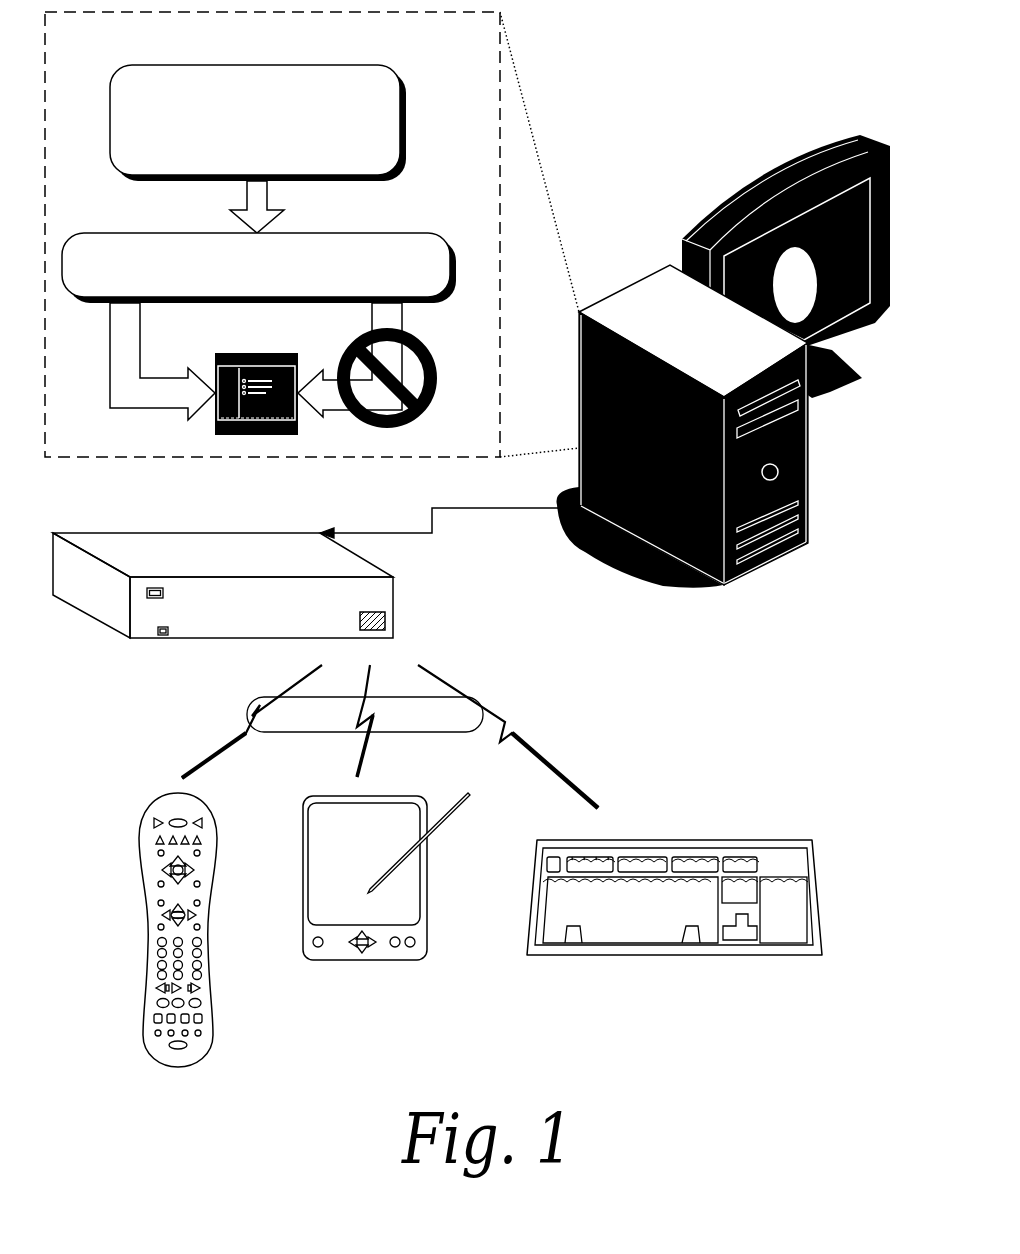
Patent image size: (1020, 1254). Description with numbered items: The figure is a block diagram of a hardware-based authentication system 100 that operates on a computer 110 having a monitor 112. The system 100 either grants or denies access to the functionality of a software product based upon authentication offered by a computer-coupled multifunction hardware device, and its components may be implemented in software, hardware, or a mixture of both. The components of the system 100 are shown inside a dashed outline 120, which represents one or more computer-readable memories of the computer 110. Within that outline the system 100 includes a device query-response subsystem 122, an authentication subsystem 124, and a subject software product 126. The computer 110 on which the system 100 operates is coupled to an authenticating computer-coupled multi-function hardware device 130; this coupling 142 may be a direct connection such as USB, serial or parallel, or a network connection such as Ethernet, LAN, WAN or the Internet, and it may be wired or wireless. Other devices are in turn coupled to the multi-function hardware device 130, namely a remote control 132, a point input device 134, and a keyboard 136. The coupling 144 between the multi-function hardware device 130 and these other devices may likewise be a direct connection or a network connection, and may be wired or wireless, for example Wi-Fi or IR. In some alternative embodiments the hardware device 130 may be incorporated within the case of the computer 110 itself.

The hardware-based authentication system 100 is at (723, 398).
The computer 110 is at (671, 467).
The monitor 112 is at (859, 247).
The dashed outline 120 is at (110, 54).
The device query-response subsystem 122 is at (373, 65).
The authentication subsystem 124 is at (388, 233).
The subject software product 126 is at (255, 353).
The multi-function hardware device 130 is at (223, 533).
The remote control 132 is at (162, 823).
The point input device 134 is at (427, 960).
The keyboard 136 is at (675, 840).
The coupling 142 is at (395, 533).
The coupling 144 is at (475, 700).